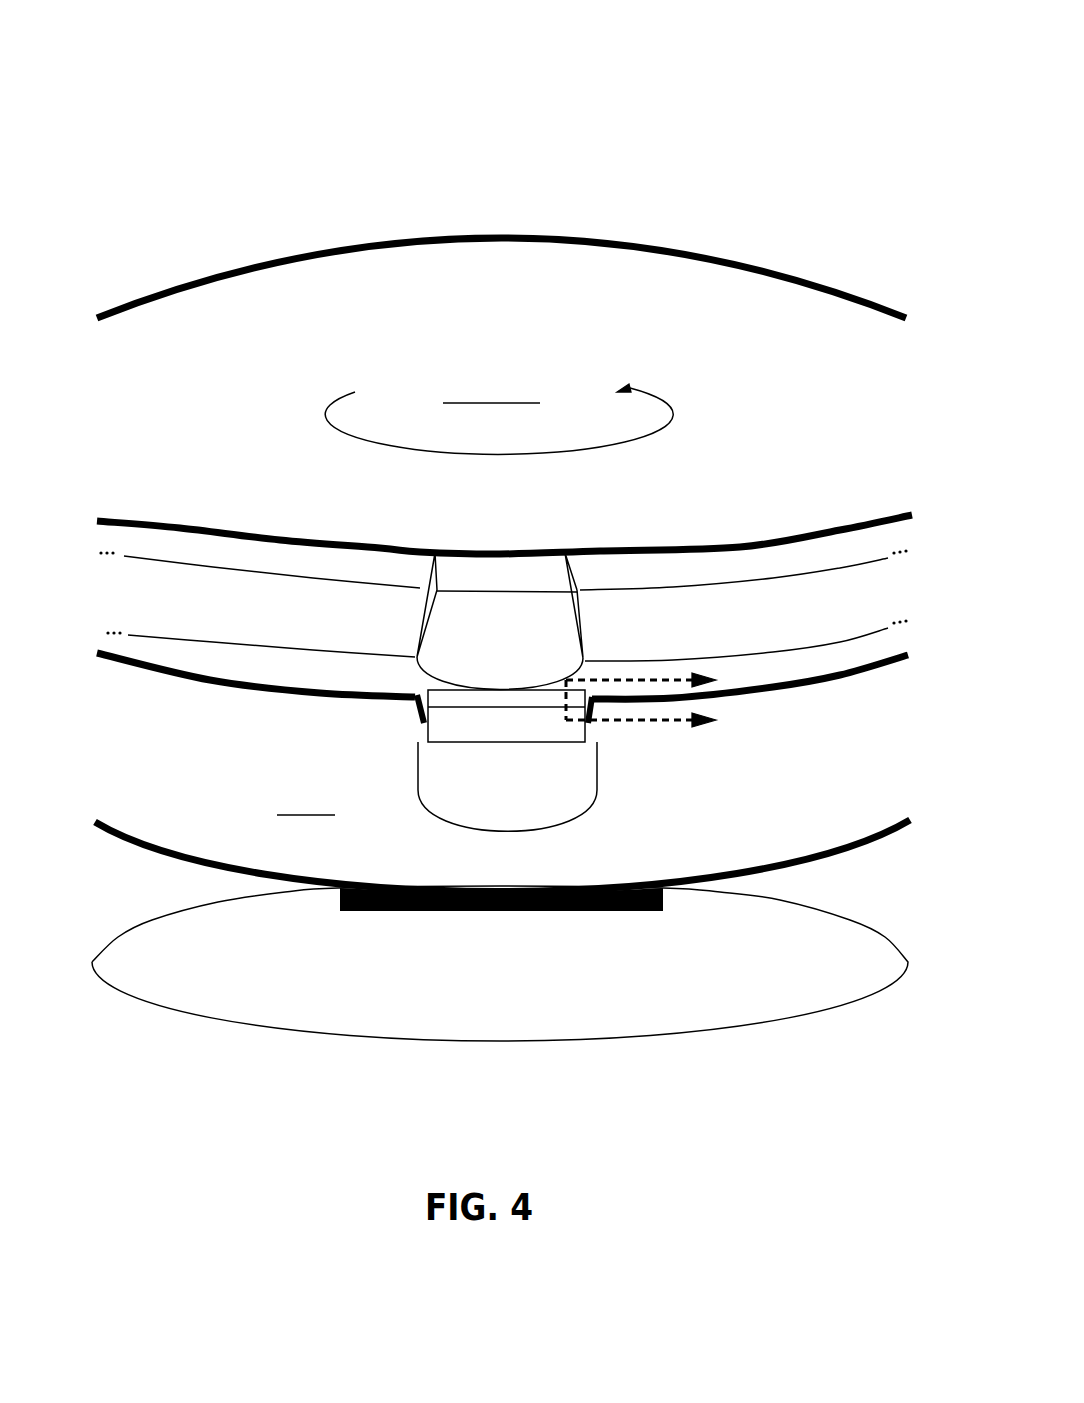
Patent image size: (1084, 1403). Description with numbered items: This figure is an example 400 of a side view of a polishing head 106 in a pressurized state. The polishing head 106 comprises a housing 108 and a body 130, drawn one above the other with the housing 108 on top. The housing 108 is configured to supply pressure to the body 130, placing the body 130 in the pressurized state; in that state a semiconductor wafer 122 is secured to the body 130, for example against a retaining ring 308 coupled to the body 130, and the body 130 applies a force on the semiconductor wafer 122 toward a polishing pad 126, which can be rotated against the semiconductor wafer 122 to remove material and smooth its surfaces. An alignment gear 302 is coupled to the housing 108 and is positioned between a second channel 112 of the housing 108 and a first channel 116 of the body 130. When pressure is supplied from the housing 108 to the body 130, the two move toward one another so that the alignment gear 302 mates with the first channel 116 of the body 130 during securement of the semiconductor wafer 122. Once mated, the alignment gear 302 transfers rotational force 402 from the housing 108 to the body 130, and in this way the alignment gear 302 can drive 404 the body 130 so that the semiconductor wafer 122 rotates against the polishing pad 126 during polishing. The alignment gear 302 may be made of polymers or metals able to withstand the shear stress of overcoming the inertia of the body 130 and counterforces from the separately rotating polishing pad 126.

The example 400 is at (221, 63).
The polishing head 106 is at (750, 137).
The housing 108 is at (553, 383).
The rotational force 402 is at (673, 413).
The drive 404 is at (712, 720).
The second channel 112 is at (495, 598).
The alignment gear 302 is at (440, 695).
The first channel 116 is at (525, 802).
The body 130 is at (263, 789).
The retaining ring 308 is at (800, 865).
The semiconductor wafer 122 is at (670, 897).
The polishing pad 126 is at (683, 1036).